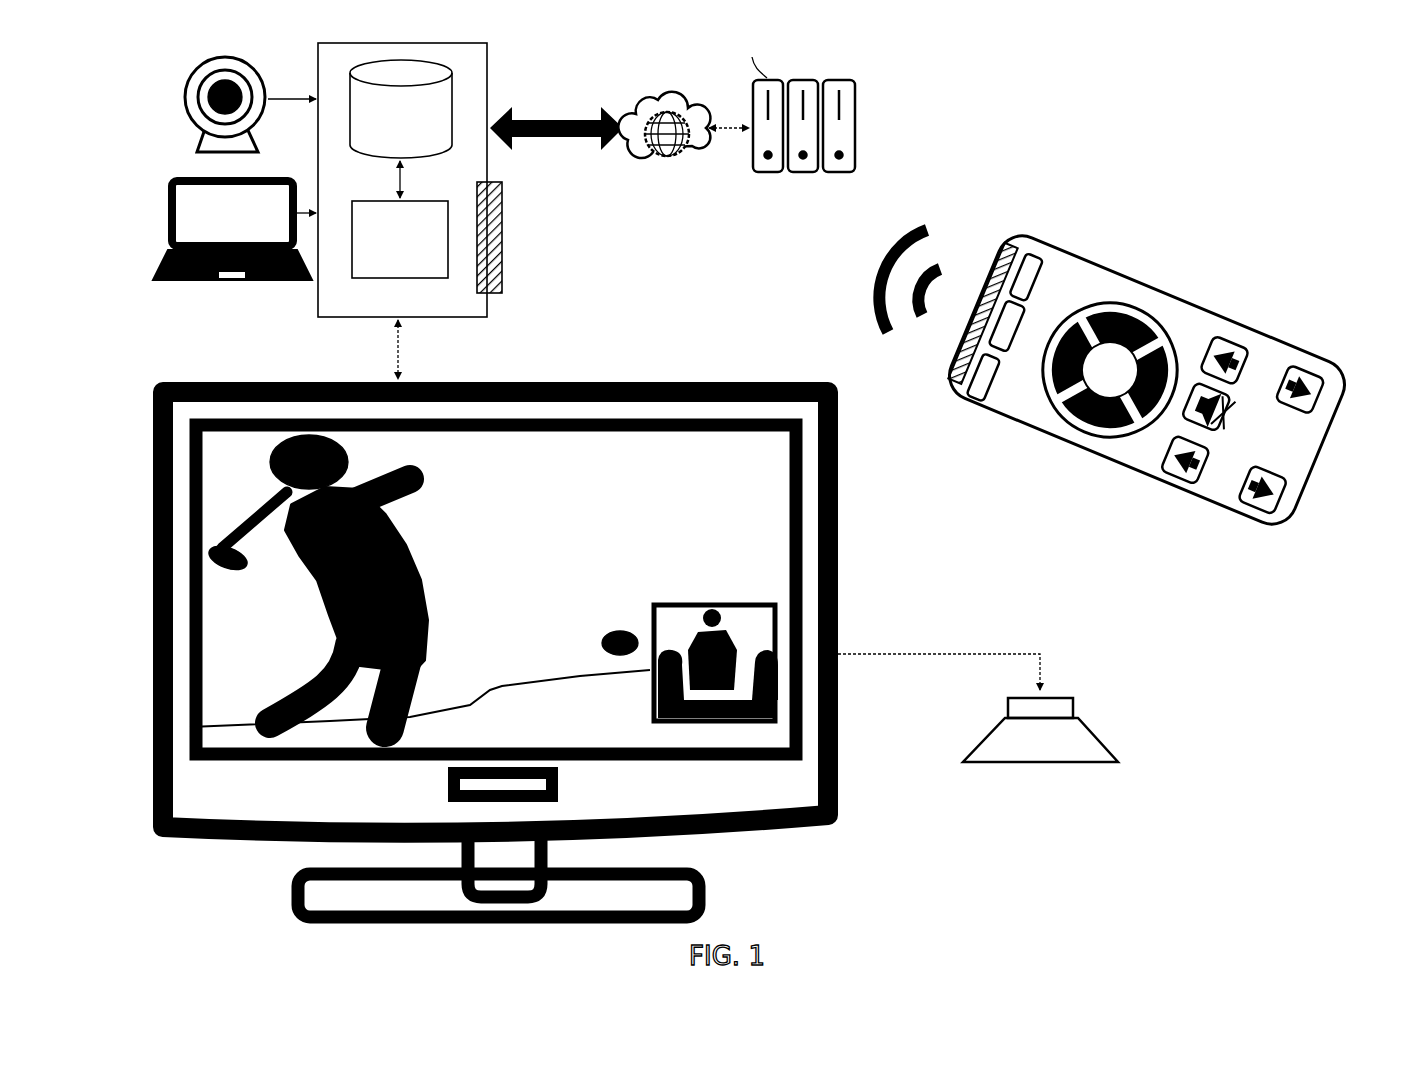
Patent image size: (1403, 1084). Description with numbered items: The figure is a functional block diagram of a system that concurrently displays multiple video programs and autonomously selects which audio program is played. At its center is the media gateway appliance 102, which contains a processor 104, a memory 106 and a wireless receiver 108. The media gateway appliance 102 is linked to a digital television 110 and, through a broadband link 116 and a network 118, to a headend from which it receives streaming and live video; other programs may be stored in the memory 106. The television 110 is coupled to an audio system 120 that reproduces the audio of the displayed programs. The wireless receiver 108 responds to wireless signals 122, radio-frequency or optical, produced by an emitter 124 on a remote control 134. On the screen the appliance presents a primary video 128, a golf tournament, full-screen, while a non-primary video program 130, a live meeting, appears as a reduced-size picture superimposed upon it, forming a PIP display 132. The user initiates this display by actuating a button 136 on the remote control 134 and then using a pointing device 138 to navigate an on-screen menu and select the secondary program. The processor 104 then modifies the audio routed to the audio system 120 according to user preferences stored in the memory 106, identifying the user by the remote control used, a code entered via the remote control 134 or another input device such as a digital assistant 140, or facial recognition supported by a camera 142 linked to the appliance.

The media gateway appliance 102 is at (318, 302).
The processor 104 is at (400, 239).
The memory 106 is at (401, 109).
The wireless receiver 108 is at (502, 238).
The digital television 110 is at (400, 363).
The broadband link 116 is at (570, 116).
The network 118 is at (650, 96).
The audio system 120 is at (1075, 733).
The wireless signals 122 is at (918, 230).
The emitter 124 is at (982, 313).
The primary video 128 is at (323, 712).
The non-primary video program 130 is at (762, 633).
The PIP display 132 is at (643, 420).
The remote control 134 is at (1101, 346).
The button 136 is at (1007, 326).
The pointing device 138 is at (1109, 369).
The digital assistant 140 is at (205, 287).
The camera 142 is at (268, 82).